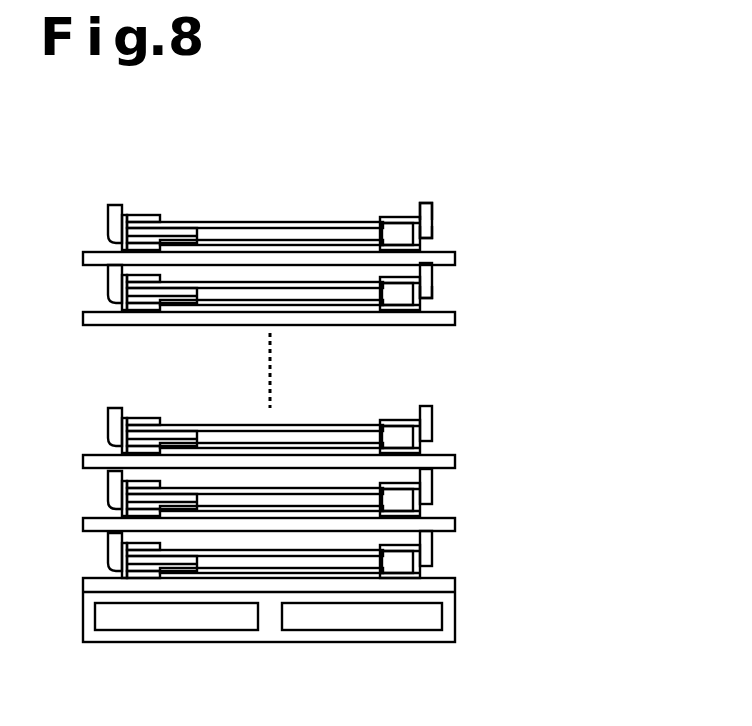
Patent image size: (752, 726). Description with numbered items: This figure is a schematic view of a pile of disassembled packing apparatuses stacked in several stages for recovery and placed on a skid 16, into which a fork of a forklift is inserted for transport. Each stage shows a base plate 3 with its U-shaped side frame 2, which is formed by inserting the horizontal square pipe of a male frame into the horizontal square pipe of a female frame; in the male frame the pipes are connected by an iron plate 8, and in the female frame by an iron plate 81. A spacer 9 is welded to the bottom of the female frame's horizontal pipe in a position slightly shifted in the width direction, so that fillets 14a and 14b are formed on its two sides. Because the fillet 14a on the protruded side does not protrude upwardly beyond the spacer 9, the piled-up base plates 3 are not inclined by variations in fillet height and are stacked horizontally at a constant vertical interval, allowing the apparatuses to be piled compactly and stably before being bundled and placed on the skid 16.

The side frame 2 is at (265, 222).
The base plate 3 is at (457, 258).
The iron plate 8 is at (162, 216).
The iron plate 81 is at (387, 217).
The spacer 9 is at (433, 220).
The fillet 14a is at (417, 213).
The fillet 14b is at (433, 243).
The skid 16 is at (455, 615).